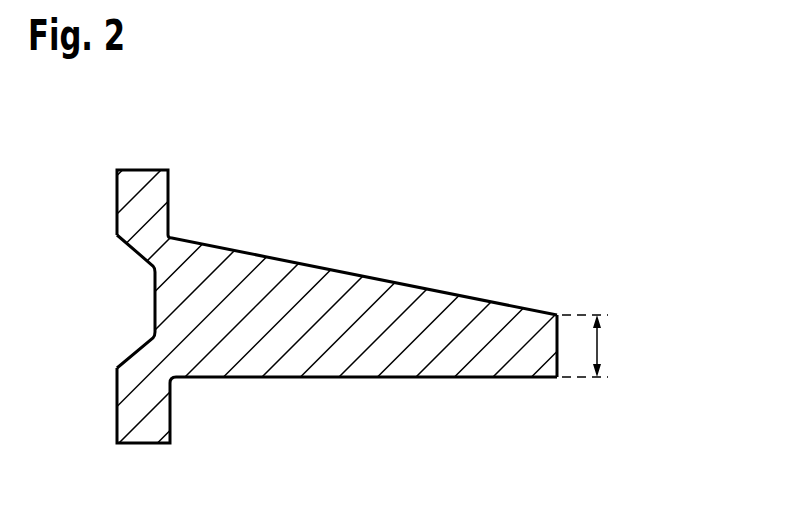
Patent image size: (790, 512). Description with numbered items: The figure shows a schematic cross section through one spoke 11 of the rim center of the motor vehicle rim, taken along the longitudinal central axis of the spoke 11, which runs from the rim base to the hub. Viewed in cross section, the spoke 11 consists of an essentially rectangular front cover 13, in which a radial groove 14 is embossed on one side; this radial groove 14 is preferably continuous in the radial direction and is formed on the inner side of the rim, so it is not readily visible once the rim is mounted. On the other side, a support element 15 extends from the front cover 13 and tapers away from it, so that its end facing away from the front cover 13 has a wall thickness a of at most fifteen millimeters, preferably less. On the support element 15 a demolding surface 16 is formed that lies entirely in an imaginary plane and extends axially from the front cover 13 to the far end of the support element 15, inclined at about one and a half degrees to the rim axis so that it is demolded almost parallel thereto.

The spoke 11 is at (376, 191).
The front cover 13 is at (150, 180).
The radial groove 14 is at (148, 308).
The support element 15 is at (427, 298).
The demolding surface 16 is at (313, 378).
The wall thickness a is at (603, 342).